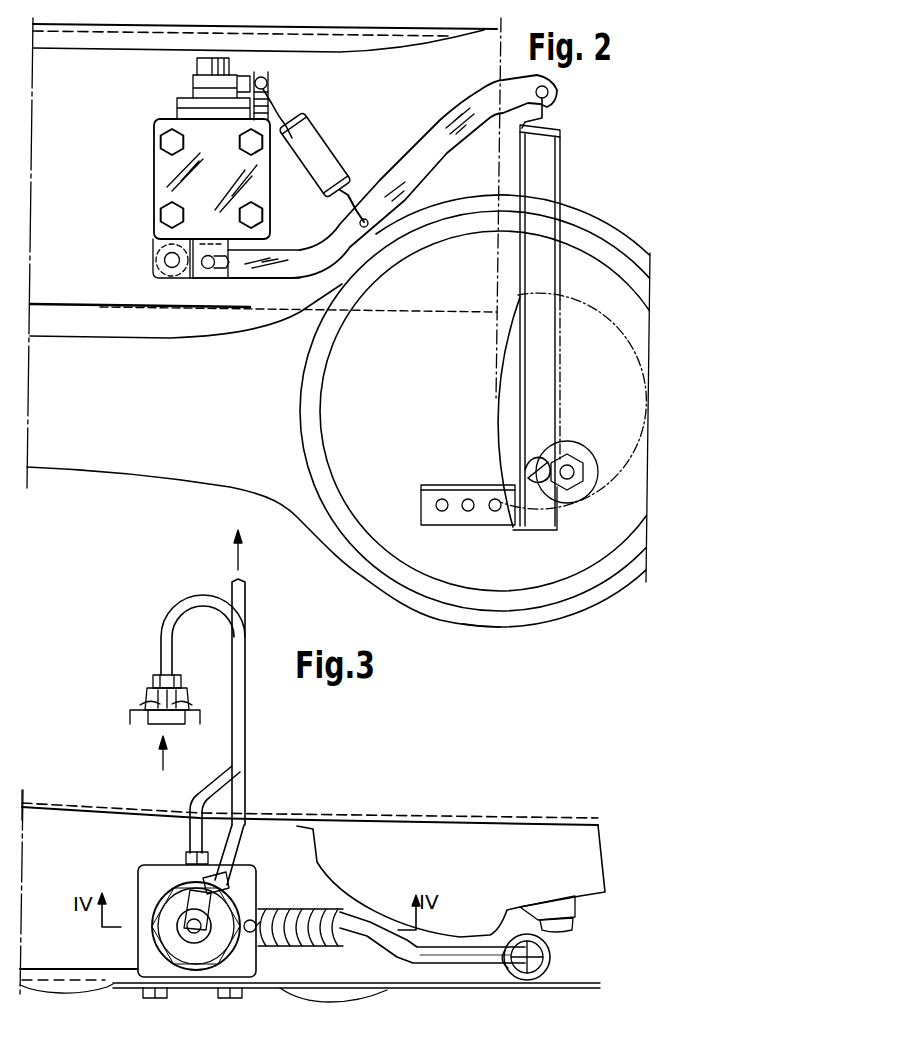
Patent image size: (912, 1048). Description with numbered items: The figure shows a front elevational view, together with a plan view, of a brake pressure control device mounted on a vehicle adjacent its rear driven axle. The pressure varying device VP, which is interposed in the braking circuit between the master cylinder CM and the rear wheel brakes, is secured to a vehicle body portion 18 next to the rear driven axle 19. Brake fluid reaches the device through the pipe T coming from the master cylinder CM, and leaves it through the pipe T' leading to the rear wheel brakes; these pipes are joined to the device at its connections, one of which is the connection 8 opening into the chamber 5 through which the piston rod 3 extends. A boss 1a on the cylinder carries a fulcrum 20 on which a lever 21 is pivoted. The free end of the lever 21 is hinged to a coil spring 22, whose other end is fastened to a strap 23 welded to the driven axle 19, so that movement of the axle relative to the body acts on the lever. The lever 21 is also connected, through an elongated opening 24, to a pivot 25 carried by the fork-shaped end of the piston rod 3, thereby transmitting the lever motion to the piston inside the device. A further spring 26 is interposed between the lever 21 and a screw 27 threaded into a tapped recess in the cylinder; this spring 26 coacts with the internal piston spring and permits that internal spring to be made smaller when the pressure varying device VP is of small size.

In FIG. 2, the vehicle body portion 18 is at (264, 253).
In FIG. 3, the vehicle body portion 18 is at (97, 820).
In FIG. 2, the rear driven axle 19 is at (123, 466).
In FIG. 3, the rear driven axle 19 is at (482, 838).
In FIG. 2, the pressure varying device VP is at (153, 135).
In FIG. 2, the screw 27 is at (270, 80).
In FIG. 2, the spring 26 is at (332, 152).
In FIG. 2, the lever 21 is at (442, 118).
In FIG. 3, the lever 21 is at (412, 956).
In FIG. 2, the coil spring 22 is at (562, 165).
In FIG. 3, the coil spring 22 is at (550, 957).
In FIG. 2, the strap 23 is at (428, 486).
In FIG. 2, the piston rod 3 is at (221, 252).
In FIG. 2, the boss 1a is at (155, 270).
In FIG. 2, the fulcrum 20 is at (172, 268).
In FIG. 2, the pivot 25 is at (208, 270).
In FIG. 2, the elongated opening 24 is at (225, 272).
In FIG. 3, the pipe T is at (203, 677).
In FIG. 3, the master cylinder CM is at (130, 714).
In FIG. 3, the pipe T' is at (213, 827).
In FIG. 3, the connection 8 is at (187, 859).
In FIG. 3, the chamber 5 is at (251, 903).